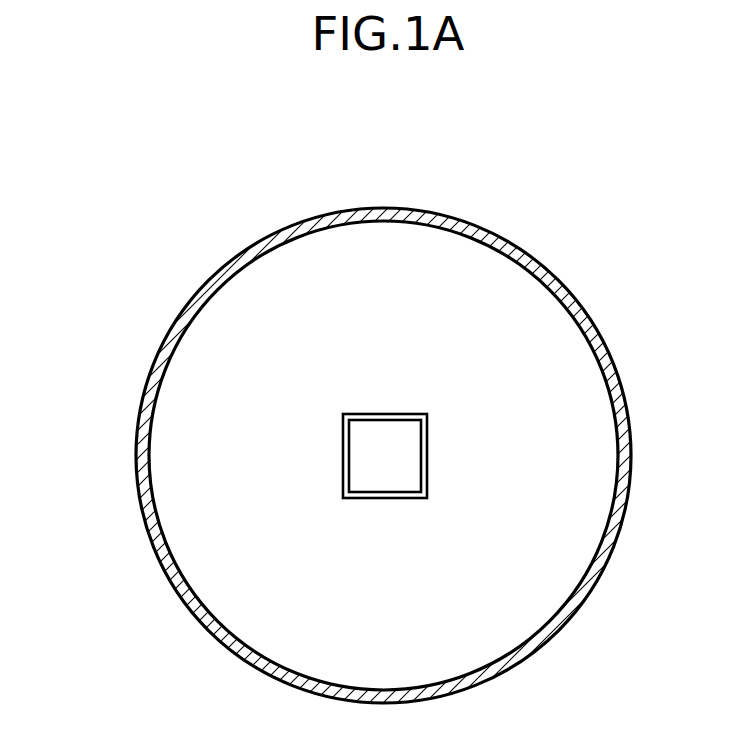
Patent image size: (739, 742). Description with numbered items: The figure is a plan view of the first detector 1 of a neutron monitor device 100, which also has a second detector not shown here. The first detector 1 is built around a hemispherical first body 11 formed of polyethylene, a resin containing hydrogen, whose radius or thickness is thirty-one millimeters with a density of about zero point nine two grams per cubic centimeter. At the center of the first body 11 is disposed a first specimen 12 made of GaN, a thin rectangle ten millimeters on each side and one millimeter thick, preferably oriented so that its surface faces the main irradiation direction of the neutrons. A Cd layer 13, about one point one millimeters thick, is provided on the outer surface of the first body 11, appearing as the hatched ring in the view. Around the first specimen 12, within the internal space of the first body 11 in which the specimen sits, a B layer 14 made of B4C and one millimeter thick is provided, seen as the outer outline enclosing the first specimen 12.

The neutron monitor device 100 is at (630, 155).
The first detector 1 is at (128, 309).
The first body 11 is at (190, 387).
The first specimen 12 is at (385, 448).
The Cd layer 13 is at (538, 258).
The B layer 14 is at (353, 414).